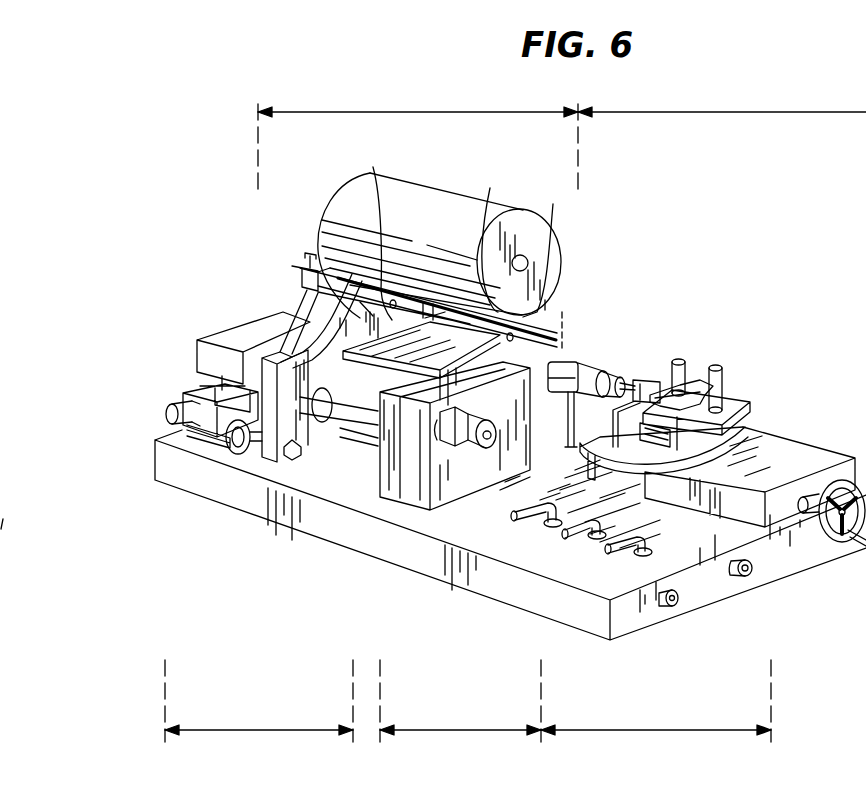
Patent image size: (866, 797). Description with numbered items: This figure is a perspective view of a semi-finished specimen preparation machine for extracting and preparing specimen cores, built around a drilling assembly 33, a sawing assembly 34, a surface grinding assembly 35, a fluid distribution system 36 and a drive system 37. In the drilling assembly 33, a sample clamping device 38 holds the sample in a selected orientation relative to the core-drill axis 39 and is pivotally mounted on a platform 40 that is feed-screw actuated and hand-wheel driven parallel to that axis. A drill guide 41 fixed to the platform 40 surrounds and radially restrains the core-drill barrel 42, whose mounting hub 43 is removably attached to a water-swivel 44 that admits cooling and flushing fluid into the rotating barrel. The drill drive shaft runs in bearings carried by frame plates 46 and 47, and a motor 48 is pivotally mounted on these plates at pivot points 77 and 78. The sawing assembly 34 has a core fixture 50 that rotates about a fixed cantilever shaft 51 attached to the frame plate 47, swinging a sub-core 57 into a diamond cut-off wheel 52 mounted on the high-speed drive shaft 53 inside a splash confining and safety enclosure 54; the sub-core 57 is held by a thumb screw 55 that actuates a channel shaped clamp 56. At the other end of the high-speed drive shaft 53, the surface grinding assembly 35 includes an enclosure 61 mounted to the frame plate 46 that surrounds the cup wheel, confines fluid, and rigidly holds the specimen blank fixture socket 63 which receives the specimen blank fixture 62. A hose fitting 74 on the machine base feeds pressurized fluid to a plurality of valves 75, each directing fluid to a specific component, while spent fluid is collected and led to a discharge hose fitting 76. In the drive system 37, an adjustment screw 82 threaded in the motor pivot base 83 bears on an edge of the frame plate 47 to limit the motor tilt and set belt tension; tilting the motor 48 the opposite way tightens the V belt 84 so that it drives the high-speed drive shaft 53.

The drilling assembly 33 is at (722, 99).
The sawing assembly 34 is at (259, 701).
The surface grinding assembly 35 is at (460, 701).
The fluid distribution system 36 is at (656, 701).
The drive system 37 is at (418, 136).
The sample clamping device 38 is at (684, 377).
The core-drill axis 39 is at (562, 312).
The platform 40 is at (800, 453).
The drill guide 41 is at (630, 378).
The core-drill barrel 42 is at (645, 383).
The mounting hub 43 is at (600, 362).
The water-swivel 44 is at (582, 336).
The frame plate 46 is at (553, 204).
The frame plate 47 is at (334, 200).
The motor 48 is at (442, 200).
The core fixture 50 is at (230, 421).
The cantilever shaft 51 is at (252, 446).
The diamond cut-off wheel 52 is at (216, 384).
The high-speed drive shaft 53 is at (340, 412).
The splash confining and safety enclosure 54 is at (232, 336).
The thumb screw 55 is at (168, 418).
The channel shaped clamp 56 is at (188, 398).
The sub-core 57 is at (244, 452).
The enclosure 61 is at (498, 464).
The specimen blank fixture 62 is at (470, 448).
The specimen blank fixture socket 63 is at (438, 448).
The hose fitting 74 is at (668, 606).
The valves 75 is at (516, 514).
The discharge hose fitting 76 is at (752, 575).
The pivot point 77 is at (493, 186).
The pivot point 78 is at (374, 168).
The adjustment screw 82 is at (309, 258).
The motor pivot base 83 is at (300, 270).
The V belt 84 is at (300, 312).